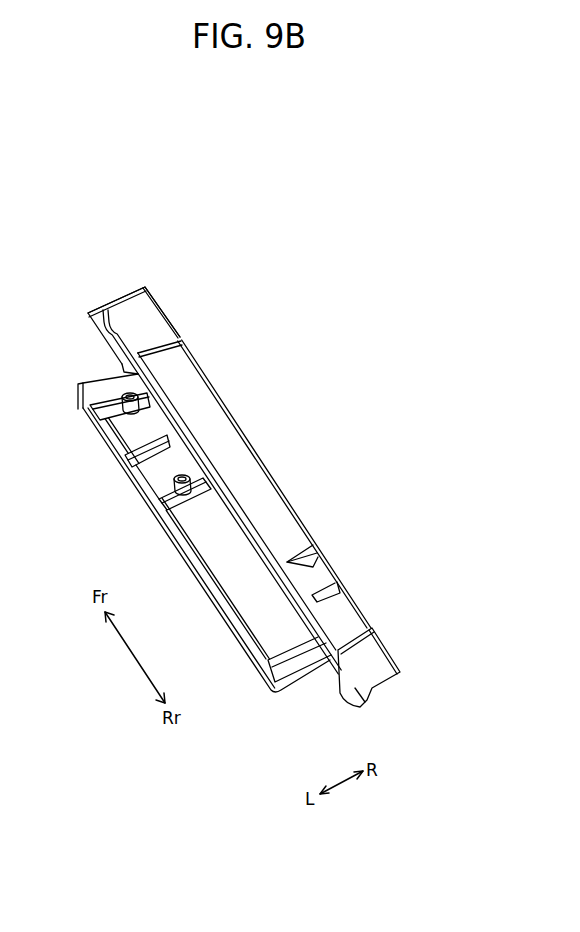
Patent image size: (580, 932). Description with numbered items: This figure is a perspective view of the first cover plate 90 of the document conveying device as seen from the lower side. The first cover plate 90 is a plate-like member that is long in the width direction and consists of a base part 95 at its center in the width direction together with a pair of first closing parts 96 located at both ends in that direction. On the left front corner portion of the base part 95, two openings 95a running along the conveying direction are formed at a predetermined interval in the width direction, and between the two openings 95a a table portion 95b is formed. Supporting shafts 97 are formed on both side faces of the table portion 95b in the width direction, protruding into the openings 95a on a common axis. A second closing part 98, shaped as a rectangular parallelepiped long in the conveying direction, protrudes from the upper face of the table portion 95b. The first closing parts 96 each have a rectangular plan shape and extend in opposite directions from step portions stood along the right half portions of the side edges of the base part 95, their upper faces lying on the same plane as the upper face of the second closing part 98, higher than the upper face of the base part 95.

The first cover plate 90 is at (239, 254).
The base part 95 is at (237, 447).
The openings 95a is at (103, 405).
The table portion 95b is at (120, 434).
The first closing parts 96 is at (131, 303).
The supporting shafts 97 is at (126, 399).
The second closing part 98 is at (130, 455).